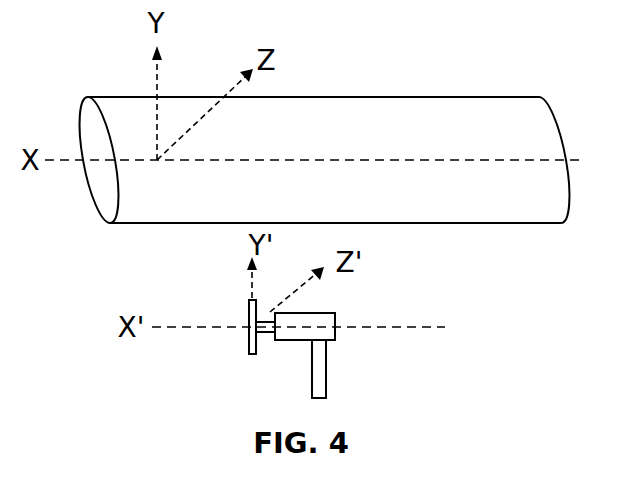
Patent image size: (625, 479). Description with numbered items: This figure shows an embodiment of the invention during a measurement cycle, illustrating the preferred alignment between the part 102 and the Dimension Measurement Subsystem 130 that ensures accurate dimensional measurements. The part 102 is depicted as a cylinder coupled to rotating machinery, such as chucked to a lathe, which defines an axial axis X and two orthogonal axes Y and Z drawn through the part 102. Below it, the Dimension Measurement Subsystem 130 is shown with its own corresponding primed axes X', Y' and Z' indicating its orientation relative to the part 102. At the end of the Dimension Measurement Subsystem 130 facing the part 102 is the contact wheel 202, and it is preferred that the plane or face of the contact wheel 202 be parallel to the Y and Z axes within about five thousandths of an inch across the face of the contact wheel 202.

The part 102 is at (448, 96).
The Dimension Measurement Subsystem 130 is at (350, 292).
The contact wheel 202 is at (248, 345).